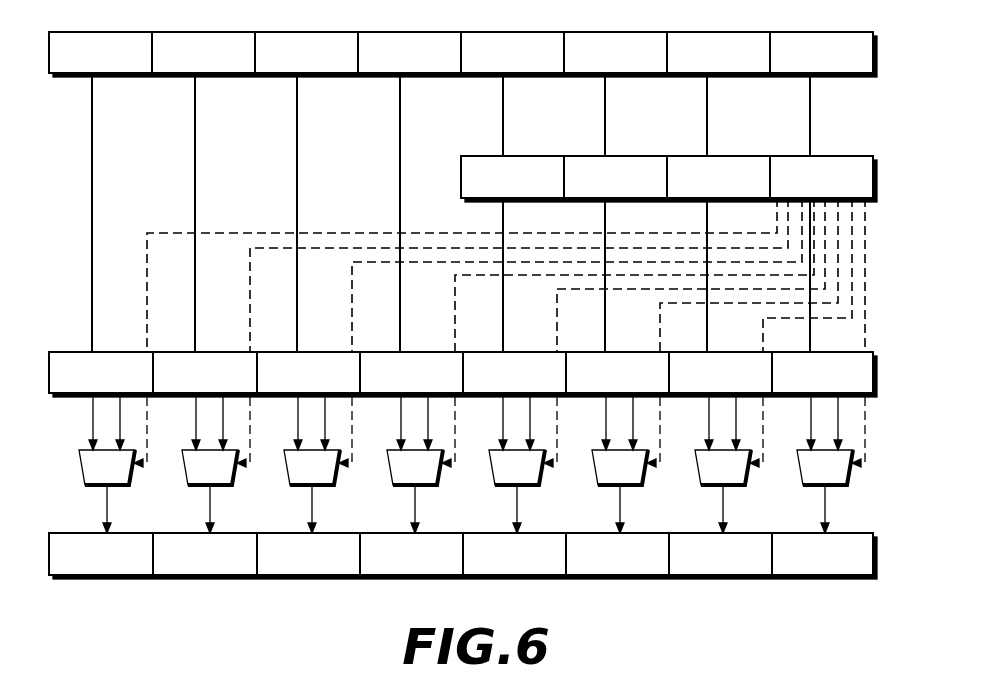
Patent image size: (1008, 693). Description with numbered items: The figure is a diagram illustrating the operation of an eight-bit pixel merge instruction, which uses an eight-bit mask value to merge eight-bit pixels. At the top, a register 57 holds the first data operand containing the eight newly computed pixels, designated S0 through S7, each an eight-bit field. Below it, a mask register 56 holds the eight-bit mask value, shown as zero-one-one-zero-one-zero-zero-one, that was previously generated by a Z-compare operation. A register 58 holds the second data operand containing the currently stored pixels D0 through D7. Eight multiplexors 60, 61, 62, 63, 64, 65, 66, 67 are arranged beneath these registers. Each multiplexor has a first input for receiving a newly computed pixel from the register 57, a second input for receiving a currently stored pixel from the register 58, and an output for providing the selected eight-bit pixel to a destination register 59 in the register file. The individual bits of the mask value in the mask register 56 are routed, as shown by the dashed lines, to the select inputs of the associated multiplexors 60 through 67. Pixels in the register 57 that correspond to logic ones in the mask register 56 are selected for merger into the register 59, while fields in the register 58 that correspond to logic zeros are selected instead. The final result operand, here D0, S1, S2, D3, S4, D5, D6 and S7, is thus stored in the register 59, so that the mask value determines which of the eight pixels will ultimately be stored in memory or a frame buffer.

The mask register 56 is at (876, 182).
The register 57 is at (876, 61).
The register 58 is at (876, 378).
The destination register 59 is at (876, 560).
The multiplexor 60 is at (113, 465).
The multiplexor 61 is at (216, 465).
The multiplexor 62 is at (318, 465).
The multiplexor 63 is at (421, 465).
The multiplexor 64 is at (523, 465).
The multiplexor 65 is at (626, 465).
The multiplexor 66 is at (729, 465).
The multiplexor 67 is at (831, 465).